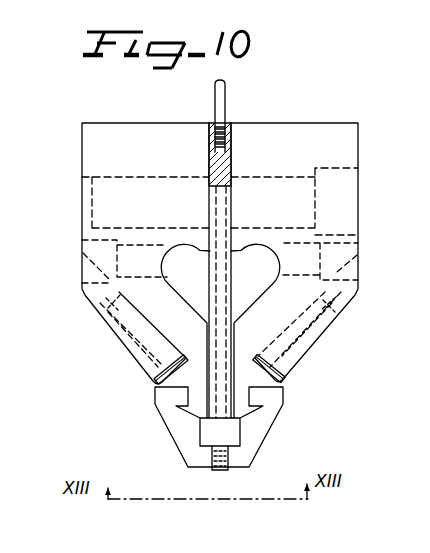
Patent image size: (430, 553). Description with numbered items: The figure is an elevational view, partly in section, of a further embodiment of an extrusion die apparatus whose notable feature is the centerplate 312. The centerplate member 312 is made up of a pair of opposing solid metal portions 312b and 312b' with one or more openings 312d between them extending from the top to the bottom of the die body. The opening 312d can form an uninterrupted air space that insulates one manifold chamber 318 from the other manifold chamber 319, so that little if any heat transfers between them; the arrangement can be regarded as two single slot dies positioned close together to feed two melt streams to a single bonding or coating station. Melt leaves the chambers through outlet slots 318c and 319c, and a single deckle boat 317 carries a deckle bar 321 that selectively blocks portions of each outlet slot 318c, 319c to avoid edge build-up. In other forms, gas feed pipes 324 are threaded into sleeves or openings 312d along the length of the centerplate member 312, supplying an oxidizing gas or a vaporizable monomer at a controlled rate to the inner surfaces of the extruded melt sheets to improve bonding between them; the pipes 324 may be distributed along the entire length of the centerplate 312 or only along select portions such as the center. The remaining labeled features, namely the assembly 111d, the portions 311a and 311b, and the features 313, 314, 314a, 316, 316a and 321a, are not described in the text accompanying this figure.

The nozzle assembly 111d is at (288, 112).
The body left portion 311a is at (82, 165).
The body right portion 311b is at (334, 123).
The centerplate member 312 is at (210, 121).
The solid metal portion 312b' is at (188, 140).
The solid metal portion 312b is at (251, 141).
The opening 312d is at (213, 187).
The passage 313 is at (283, 176).
The right side passage 314 is at (310, 339).
The left side passage 314a is at (114, 340).
The right inlet port 316 is at (320, 261).
The left inlet port 316a is at (124, 261).
The deckle boat 317 is at (265, 446).
The manifold chamber 318 is at (260, 284).
The outlet slot 318c is at (238, 422).
The manifold chamber 319 is at (194, 284).
The outlet slot 319c is at (213, 421).
The deckle bar 321 is at (212, 436).
The outlet orifice 321a is at (224, 472).
The gas feed pipe 324 is at (226, 103).